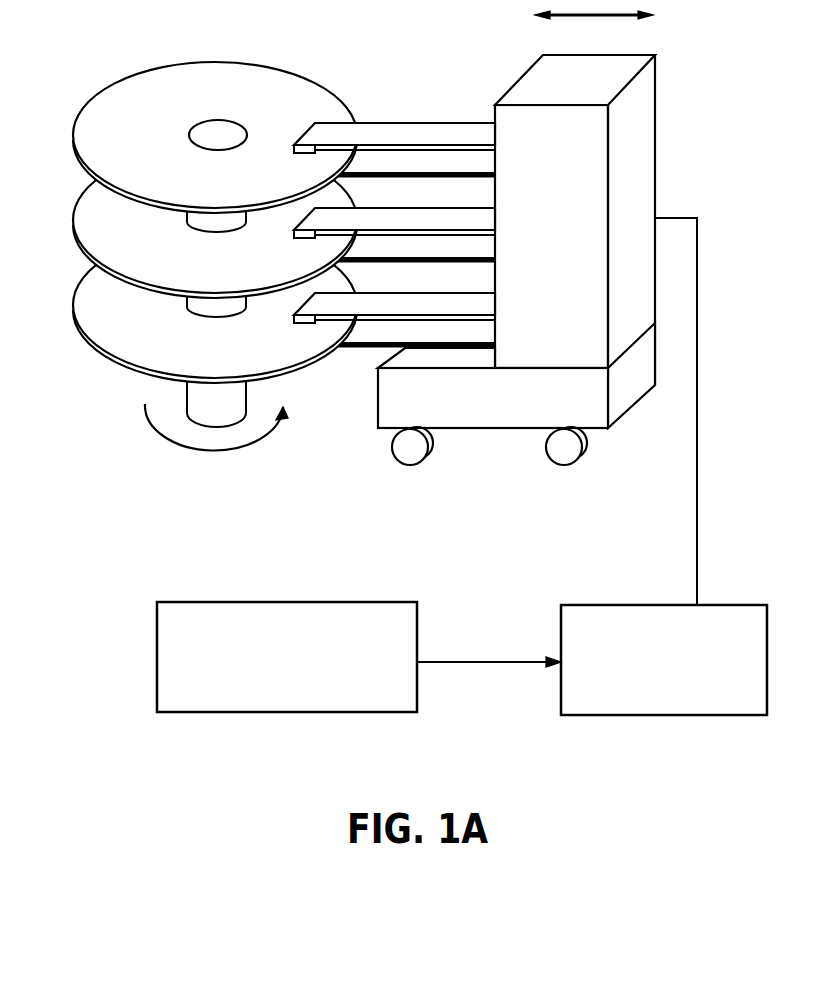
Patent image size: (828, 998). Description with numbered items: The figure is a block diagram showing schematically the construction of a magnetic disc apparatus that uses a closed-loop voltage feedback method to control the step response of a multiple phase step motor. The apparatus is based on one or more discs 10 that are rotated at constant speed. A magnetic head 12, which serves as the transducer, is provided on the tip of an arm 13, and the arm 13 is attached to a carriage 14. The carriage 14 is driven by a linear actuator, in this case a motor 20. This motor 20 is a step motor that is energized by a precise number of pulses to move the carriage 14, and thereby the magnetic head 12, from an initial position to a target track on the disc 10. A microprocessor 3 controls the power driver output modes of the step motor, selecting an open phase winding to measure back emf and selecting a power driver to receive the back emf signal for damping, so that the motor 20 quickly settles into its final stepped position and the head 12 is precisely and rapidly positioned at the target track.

The disc 10 is at (256, 250).
The magnetic head 12 is at (271, 256).
The arm 13 is at (394, 194).
The carriage 14 is at (567, 263).
The microprocessor 3 is at (272, 698).
The motor 20 is at (676, 704).